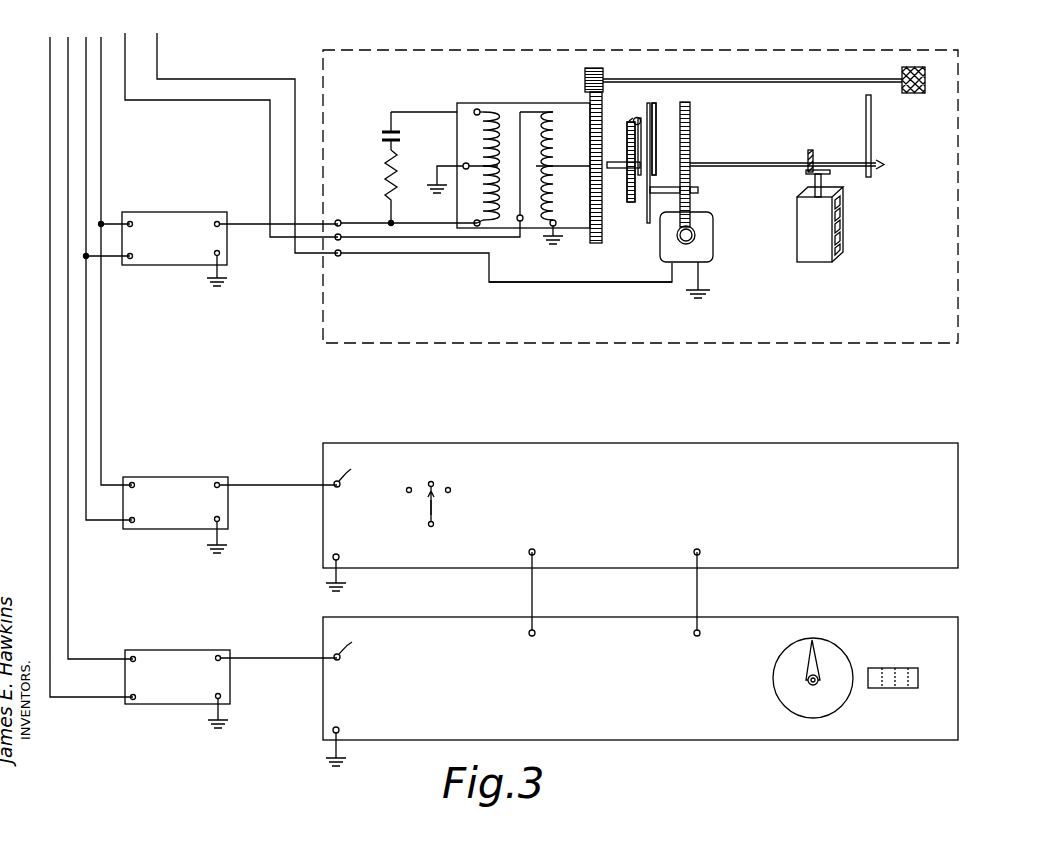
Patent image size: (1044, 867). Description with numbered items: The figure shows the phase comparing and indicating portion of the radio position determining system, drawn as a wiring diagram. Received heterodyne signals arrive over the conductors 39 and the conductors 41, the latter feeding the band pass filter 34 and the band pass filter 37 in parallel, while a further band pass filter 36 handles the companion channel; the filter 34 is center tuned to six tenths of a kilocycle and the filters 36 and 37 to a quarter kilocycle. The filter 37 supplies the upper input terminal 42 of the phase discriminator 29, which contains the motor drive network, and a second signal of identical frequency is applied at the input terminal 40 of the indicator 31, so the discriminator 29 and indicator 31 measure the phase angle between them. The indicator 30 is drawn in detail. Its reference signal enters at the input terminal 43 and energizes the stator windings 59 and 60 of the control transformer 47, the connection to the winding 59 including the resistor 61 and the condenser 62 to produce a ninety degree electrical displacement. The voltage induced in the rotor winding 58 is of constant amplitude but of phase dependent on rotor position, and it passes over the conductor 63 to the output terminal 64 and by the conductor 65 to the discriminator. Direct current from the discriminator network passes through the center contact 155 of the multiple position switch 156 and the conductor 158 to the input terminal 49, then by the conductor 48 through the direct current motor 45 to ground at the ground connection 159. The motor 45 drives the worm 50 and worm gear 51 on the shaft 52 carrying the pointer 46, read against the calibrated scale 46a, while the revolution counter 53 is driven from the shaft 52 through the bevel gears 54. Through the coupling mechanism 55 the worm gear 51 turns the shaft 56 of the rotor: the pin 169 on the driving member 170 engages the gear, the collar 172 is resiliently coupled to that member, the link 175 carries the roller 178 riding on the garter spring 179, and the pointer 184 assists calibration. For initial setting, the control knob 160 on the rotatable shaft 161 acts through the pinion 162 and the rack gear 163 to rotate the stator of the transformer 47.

The conductors 39 is at (68, 128).
The conductors 41 is at (88, 144).
The conductor 158 is at (234, 79).
The conductor 65 is at (268, 122).
The band pass filter 34 is at (168, 267).
The band pass filter 37 is at (178, 530).
The band pass filter 36 is at (165, 650).
The indicator 30 is at (958, 187).
The input terminal 43 is at (341, 220).
The output terminal 64 is at (341, 239).
The input terminal 49 is at (340, 256).
The conductor 63 is at (428, 238).
The conductor 48 is at (530, 283).
The control transformer 47 is at (513, 98).
The condenser 62 is at (400, 136).
The resistor 61 is at (397, 170).
The stator winding 59 is at (510, 111).
The stator winding 60 is at (510, 204).
The rotor winding 58 is at (556, 126).
The rack gear 163 is at (590, 238).
The pinion 162 is at (603, 74).
The rotatable shaft 161 is at (752, 79).
The control knob 160 is at (925, 76).
The coupling mechanism 55 is at (648, 106).
The garter spring 179 is at (627, 152).
The roller 178 is at (627, 122).
The shaft 56 is at (618, 168).
The collar 172 is at (644, 176).
The driving member 170 is at (649, 223).
The link 175 is at (657, 142).
The pointer 184 is at (657, 118).
The pin 169 is at (663, 190).
The worm gear 51 is at (690, 110).
The worm 50 is at (692, 228).
The direct current motor 45 is at (713, 232).
The ground connection 159 is at (706, 292).
The shaft 52 is at (770, 161).
The bevel gears 54 is at (818, 160).
The pointer 46 is at (871, 132).
The revolution counter 53 is at (845, 211).
The phase discriminator 29 is at (958, 493).
The input terminal 42 is at (354, 472).
The multiple position switch 156 is at (445, 468).
The center contact 155 is at (434, 508).
The indicator 31 is at (958, 630).
The input terminal 40 is at (355, 647).
The calibrated scale 46a is at (782, 686).